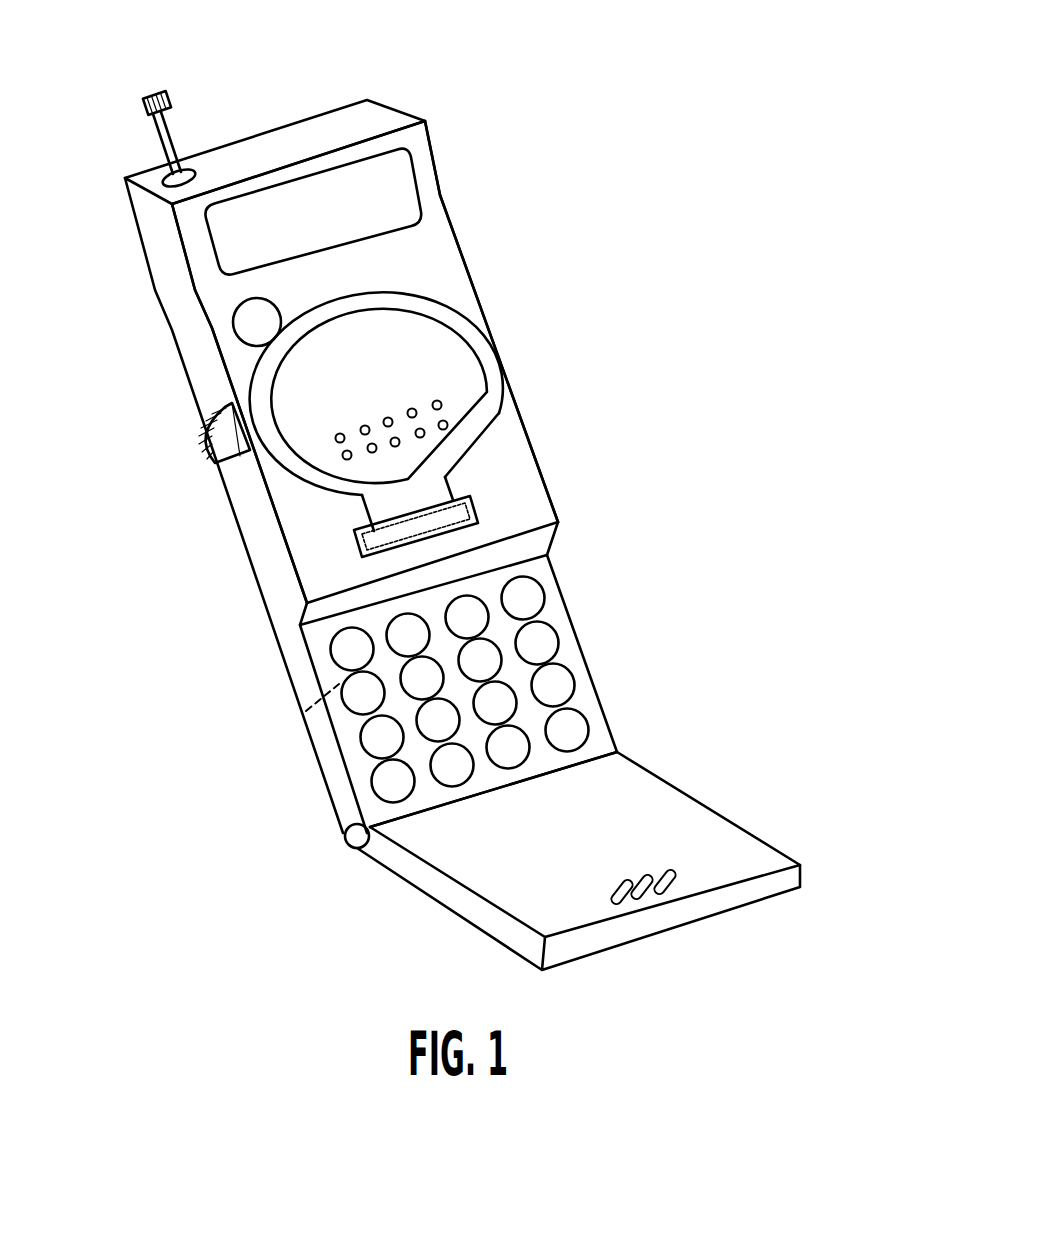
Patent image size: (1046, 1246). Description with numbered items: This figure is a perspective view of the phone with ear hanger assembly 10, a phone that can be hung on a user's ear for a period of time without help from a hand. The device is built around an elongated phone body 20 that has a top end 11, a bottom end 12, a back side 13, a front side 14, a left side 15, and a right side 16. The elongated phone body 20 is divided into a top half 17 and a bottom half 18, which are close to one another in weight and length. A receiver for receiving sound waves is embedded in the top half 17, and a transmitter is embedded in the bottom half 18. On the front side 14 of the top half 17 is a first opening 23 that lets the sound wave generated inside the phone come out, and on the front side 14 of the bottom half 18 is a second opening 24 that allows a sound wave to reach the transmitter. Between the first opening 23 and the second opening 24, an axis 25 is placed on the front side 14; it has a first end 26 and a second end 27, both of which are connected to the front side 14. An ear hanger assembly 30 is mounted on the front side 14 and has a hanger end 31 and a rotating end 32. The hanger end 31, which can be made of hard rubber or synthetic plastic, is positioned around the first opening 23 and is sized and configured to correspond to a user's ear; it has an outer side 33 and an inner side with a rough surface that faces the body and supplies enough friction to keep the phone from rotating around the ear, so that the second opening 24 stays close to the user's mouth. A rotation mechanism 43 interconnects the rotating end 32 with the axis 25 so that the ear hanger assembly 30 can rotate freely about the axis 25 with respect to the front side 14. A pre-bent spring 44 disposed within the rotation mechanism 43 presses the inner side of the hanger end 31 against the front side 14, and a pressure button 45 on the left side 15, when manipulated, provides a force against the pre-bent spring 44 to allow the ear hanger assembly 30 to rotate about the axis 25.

The phone with ear hanger assembly 10 is at (662, 95).
The top end 11 is at (293, 142).
The bottom end 12 is at (770, 883).
The back side 13 is at (306, 711).
The front side 14 is at (585, 693).
The left side 15 is at (285, 517).
The right side 16 is at (552, 497).
The top half 17 is at (223, 284).
The bottom half 18 is at (620, 788).
The elongated phone body 20 is at (358, 775).
The first opening 23 is at (441, 402).
The second opening 24 is at (673, 876).
The axis 25 is at (468, 498).
The first end 26 is at (325, 598).
The second end 27 is at (478, 508).
The ear hanger assembly 30 is at (267, 550).
The hanger end 31 is at (270, 456).
The rotating end 32 is at (350, 535).
The outer side 33 is at (447, 317).
The rotation mechanism 43 is at (335, 652).
The pre-bent spring 44 is at (483, 530).
The pressure button 45 is at (200, 442).